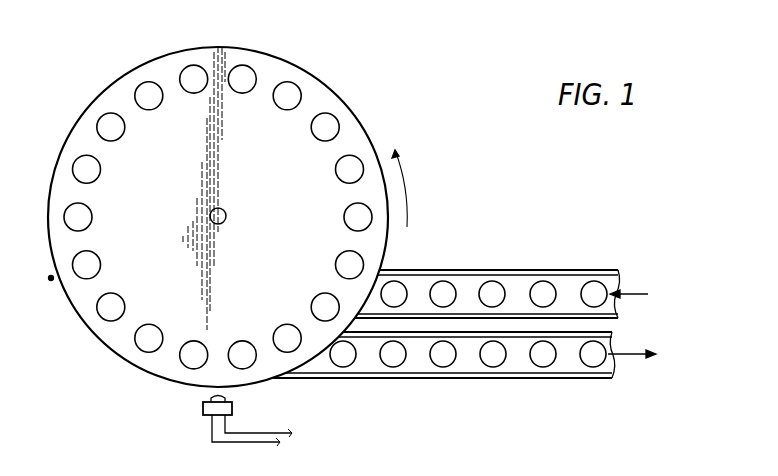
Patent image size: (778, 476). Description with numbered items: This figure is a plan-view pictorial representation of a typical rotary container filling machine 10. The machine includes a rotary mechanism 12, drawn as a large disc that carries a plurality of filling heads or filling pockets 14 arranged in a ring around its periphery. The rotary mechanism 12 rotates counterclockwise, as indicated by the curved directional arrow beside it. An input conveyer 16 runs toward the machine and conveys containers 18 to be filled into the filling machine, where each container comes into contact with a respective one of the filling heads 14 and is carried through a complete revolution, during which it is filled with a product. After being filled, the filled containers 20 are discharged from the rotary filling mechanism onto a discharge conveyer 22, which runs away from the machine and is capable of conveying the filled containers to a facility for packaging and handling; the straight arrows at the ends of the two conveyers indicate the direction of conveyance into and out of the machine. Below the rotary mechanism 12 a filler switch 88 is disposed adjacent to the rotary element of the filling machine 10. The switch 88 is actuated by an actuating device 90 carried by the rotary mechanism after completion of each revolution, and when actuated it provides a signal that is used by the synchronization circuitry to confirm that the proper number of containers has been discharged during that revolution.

The rotary container filling machine 10 is at (341, 98).
The rotary mechanism 12 is at (272, 72).
The filling heads 14 is at (234, 70).
The input conveyer 16 is at (525, 284).
The containers 18 is at (490, 289).
The pockets in lower belt 20 is at (533, 362).
The discharge conveyer 22 is at (412, 365).
The filler switch 88 is at (200, 409).
The actuating device 90 is at (51, 281).